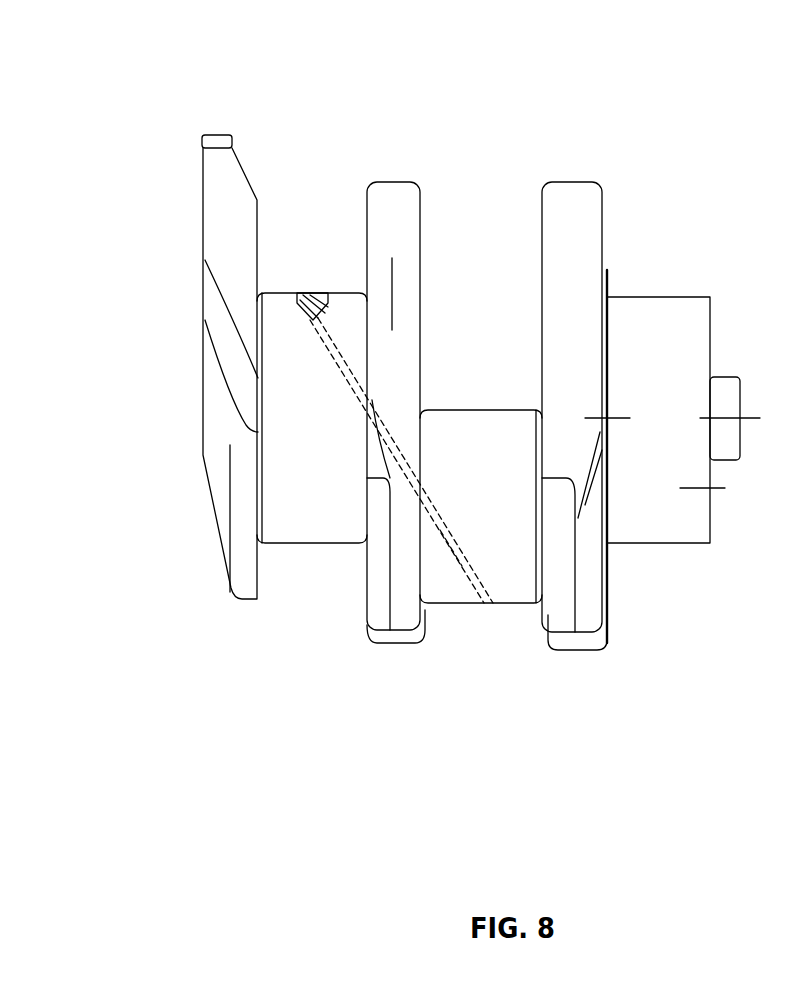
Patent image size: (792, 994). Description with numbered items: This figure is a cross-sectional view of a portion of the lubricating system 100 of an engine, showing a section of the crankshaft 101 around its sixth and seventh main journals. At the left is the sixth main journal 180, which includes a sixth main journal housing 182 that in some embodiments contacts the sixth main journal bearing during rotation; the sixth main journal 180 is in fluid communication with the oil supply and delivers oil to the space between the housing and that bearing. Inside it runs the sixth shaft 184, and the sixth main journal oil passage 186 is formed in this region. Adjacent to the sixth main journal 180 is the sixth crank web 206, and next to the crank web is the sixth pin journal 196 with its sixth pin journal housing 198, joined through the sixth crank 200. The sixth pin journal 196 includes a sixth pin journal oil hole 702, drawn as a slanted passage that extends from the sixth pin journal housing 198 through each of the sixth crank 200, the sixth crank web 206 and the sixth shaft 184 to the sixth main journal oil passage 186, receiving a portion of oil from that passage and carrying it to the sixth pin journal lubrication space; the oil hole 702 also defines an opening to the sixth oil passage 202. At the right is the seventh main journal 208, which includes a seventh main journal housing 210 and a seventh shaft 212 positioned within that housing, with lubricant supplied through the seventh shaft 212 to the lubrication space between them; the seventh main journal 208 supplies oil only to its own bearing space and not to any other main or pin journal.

The roller assembly 100 is at (136, 80).
The roller 101 is at (164, 229).
The sixth main journal 180 is at (283, 600).
The sixth main journal housing 182 is at (287, 293).
The sixth shaft 184 is at (317, 510).
The sixth main journal oil passage 186 is at (315, 293).
The sixth pin journal 196 is at (526, 634).
The sixth pin journal housing 198 is at (463, 410).
The sixth crank 200 is at (510, 430).
The sixth oil passage 202 is at (453, 570).
The sixth crank web 206 is at (397, 641).
The seventh main journal 208 is at (669, 604).
The seventh main journal housing 210 is at (640, 297).
The seventh shaft 212 is at (687, 327).
The sixth pin journal oil hole 702 is at (490, 605).